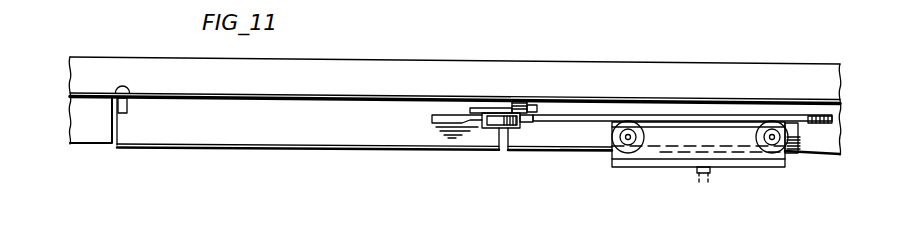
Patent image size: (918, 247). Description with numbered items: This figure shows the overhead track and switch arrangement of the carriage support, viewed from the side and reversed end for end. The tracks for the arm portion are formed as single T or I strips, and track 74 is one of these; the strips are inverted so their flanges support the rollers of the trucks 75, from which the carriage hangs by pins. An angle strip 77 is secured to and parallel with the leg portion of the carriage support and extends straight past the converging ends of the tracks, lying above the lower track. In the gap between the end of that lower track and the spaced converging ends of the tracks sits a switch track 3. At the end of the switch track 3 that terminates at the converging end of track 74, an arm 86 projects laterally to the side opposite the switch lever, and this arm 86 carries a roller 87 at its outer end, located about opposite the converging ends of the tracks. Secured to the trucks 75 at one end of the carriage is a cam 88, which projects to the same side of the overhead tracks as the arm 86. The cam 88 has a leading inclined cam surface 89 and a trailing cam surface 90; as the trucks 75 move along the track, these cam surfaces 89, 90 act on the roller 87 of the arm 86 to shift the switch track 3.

The switch track 3 is at (300, 133).
The angle strip 77 is at (363, 77).
The arm 86 is at (453, 116).
The roller 87 is at (498, 117).
The trailing cam surface 90 is at (562, 117).
The track 74 is at (590, 137).
The cam 88 is at (692, 122).
The leading inclined cam surface 89 is at (807, 122).
The trucks 75 is at (718, 172).